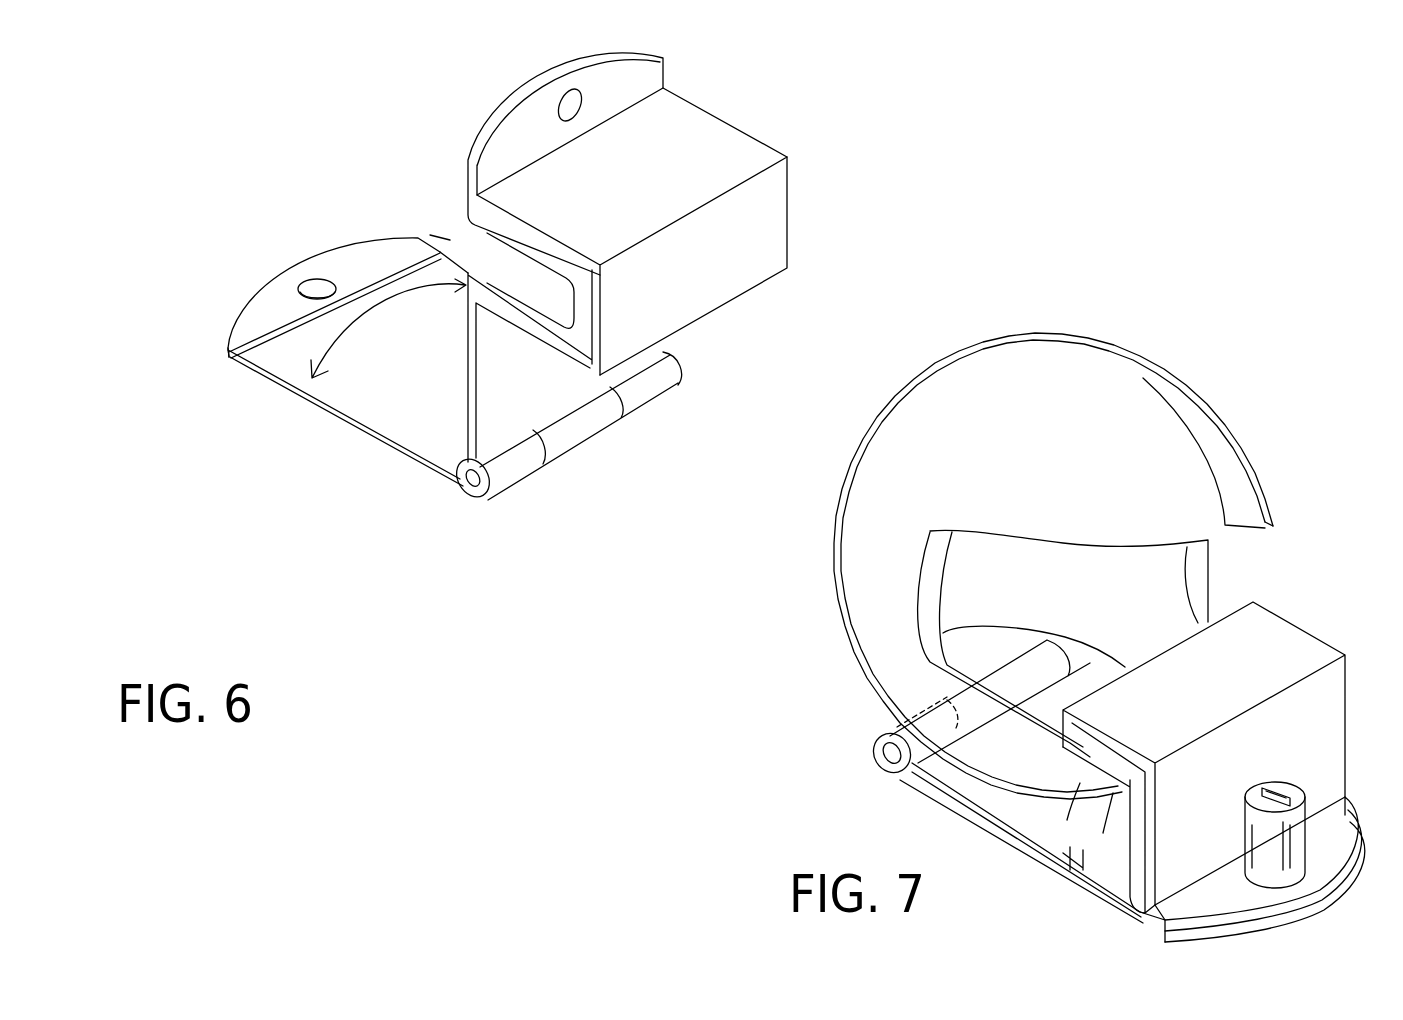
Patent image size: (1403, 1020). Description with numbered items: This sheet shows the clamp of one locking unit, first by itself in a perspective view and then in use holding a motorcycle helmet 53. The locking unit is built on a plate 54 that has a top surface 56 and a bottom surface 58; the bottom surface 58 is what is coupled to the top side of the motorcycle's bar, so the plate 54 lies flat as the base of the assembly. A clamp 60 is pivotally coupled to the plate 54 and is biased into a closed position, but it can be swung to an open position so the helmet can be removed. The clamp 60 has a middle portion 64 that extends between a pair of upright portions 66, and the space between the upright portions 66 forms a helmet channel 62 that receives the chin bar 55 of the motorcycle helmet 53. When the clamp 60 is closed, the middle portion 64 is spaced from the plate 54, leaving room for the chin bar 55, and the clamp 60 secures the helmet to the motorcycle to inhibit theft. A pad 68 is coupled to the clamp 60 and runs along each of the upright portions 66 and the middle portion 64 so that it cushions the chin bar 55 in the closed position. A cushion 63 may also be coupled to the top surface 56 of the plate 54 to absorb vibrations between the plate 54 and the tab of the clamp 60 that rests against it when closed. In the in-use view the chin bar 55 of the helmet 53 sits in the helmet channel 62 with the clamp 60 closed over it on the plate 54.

In FIG. 7, the motorcycle helmet 53 is at (1075, 338).
In FIG. 6, the plate 54 is at (228, 352).
In FIG. 7, the chin bar 55 is at (1093, 763).
In FIG. 6, the top surface 56 is at (400, 345).
In FIG. 6, the bottom surface 58 is at (385, 450).
In FIG. 7, the bottom surface 58 is at (1178, 948).
In FIG. 6, the clamp 60 is at (498, 420).
In FIG. 7, the clamp 60 is at (1340, 823).
In FIG. 6, the helmet channel 62 is at (450, 240).
In FIG. 6, the cushion 63 is at (272, 305).
In FIG. 7, the cushion 63 is at (1283, 903).
In FIG. 6, the middle portion 64 is at (747, 268).
In FIG. 6, the upright portions 66 is at (710, 143).
In FIG. 6, the pad 68 is at (530, 307).